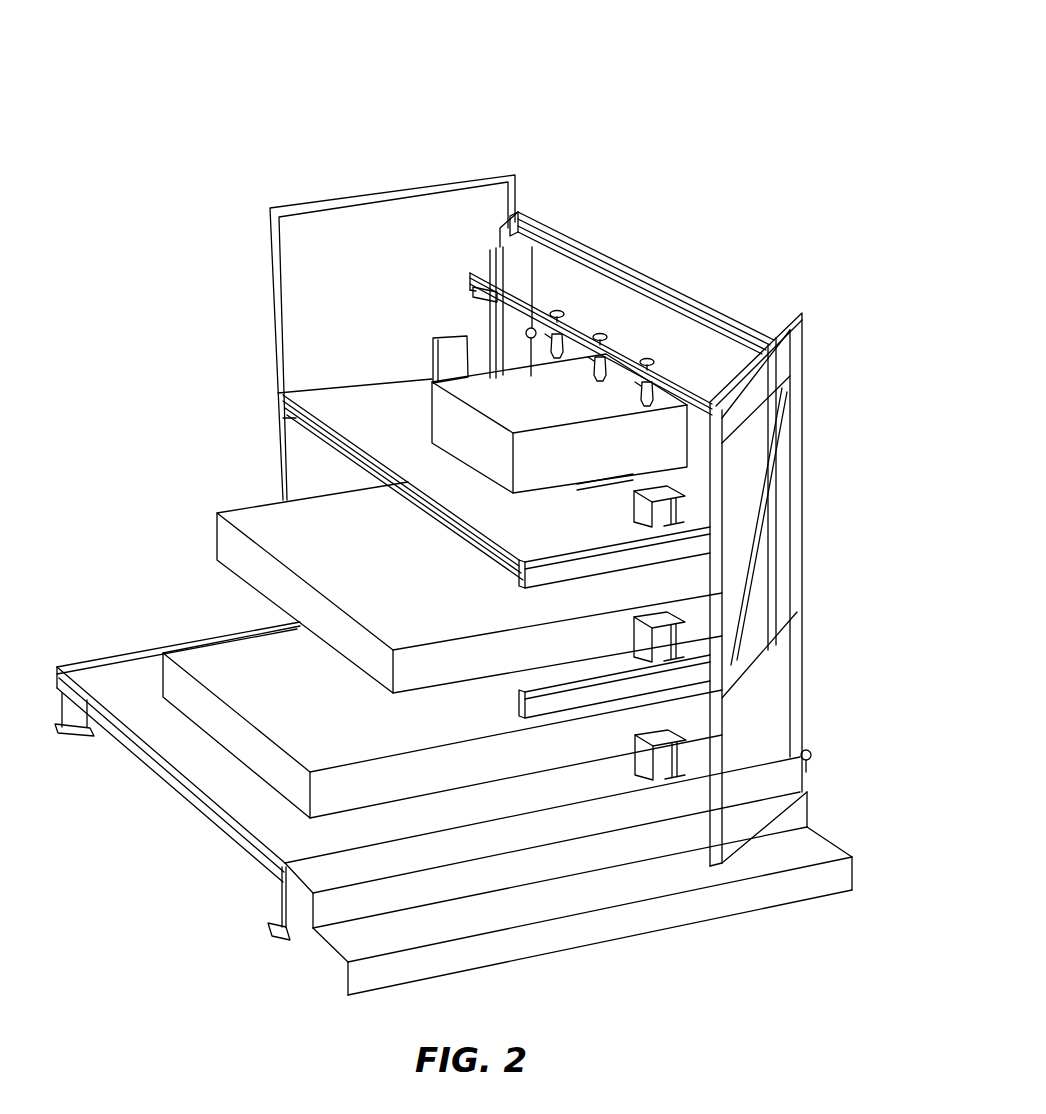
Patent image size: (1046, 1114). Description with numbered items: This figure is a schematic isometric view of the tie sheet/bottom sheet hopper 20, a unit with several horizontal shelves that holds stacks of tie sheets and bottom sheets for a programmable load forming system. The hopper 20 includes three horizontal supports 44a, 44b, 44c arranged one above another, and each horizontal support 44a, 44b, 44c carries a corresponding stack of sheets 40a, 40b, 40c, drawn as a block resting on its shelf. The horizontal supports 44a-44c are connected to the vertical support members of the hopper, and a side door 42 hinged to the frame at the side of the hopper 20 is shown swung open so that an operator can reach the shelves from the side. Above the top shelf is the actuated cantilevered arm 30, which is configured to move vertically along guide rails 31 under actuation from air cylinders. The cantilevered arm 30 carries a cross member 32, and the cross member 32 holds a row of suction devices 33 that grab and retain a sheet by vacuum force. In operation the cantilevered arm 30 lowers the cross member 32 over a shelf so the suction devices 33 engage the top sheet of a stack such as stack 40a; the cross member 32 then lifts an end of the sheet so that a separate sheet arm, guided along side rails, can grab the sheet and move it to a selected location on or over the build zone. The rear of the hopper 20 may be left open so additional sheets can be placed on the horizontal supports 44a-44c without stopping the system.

The tie sheet/bottom sheet hopper 20 is at (698, 108).
The cantilevered arm 30 is at (519, 265).
The guide rails 31 is at (519, 213).
The cross member 32 is at (610, 254).
The suction devices 33 is at (603, 332).
The stack of sheets 40a is at (551, 407).
The stack of sheets 40b is at (407, 569).
The stack of sheets 40c is at (330, 710).
The side door 42 is at (757, 428).
The horizontal support 44a is at (422, 462).
The horizontal support 44b is at (547, 698).
The horizontal support 44c is at (240, 793).